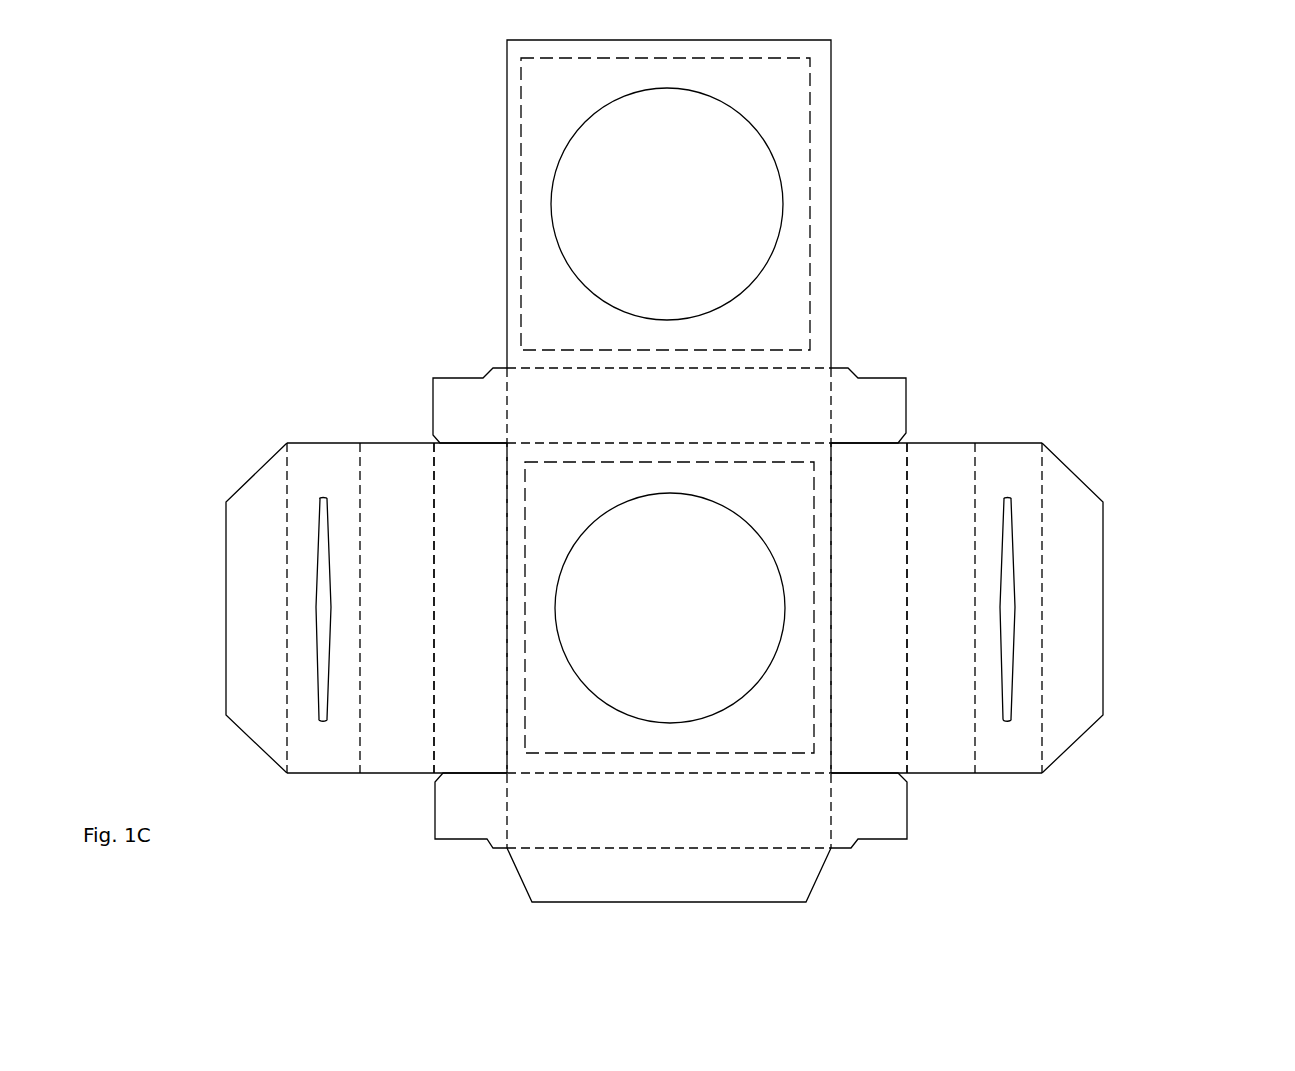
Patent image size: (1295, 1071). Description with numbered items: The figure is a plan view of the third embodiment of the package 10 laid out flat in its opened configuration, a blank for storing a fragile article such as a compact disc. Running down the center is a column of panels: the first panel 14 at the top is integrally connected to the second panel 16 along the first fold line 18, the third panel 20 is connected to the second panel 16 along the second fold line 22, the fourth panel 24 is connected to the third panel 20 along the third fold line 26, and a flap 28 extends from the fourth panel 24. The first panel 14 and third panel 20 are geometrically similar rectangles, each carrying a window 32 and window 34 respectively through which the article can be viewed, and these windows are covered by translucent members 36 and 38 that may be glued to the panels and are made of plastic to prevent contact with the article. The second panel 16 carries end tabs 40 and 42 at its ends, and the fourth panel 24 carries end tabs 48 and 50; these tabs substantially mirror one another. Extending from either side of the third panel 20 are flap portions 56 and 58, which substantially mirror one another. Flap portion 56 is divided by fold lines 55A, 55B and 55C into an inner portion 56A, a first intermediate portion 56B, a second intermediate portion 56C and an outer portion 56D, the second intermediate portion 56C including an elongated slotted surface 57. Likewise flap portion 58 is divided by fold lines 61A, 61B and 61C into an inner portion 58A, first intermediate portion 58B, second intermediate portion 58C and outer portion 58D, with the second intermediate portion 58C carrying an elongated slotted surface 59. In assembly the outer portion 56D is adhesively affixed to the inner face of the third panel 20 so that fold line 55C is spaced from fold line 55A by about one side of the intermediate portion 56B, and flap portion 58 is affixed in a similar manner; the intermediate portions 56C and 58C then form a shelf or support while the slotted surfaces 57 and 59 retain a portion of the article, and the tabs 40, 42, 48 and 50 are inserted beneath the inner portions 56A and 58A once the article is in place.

The package 10 is at (432, 127).
The first panel 14 is at (832, 135).
The second panel 16 is at (733, 397).
The first fold line 18 is at (553, 368).
The third panel 20 is at (820, 440).
The second fold line 22 is at (620, 443).
The fourth panel 24 is at (813, 802).
The third fold line 26 is at (594, 773).
The flap 28 is at (802, 877).
The window 32 is at (578, 150).
The window 34 is at (632, 717).
The translucent member 36 is at (738, 202).
The translucent member 38 is at (758, 633).
The end tab 40 is at (468, 413).
The end tab 42 is at (897, 393).
The end tab 48 is at (468, 819).
The end tab 50 is at (883, 828).
The fold line 55A is at (434, 483).
The fold line 55B is at (360, 483).
The fold line 55C is at (285, 485).
The flap portion 56 is at (462, 775).
The inner portion 56A is at (470, 608).
The first intermediate portion 56B is at (403, 608).
The second intermediate portion 56C is at (330, 608).
The outer portion 56D is at (256, 608).
The elongated slotted surface 57 is at (320, 550).
The flap portion 58 is at (907, 503).
The inner portion 58A is at (869, 608).
The first intermediate portion 58B is at (937, 608).
The second intermediate portion 58C is at (1007, 608).
The outer portion 58D is at (1072, 608).
The elongated slotted surface 59 is at (1010, 550).
The fold line 61A is at (975, 503).
The fold line 61B is at (1042, 500).
The fold line 61C is at (1042, 517).